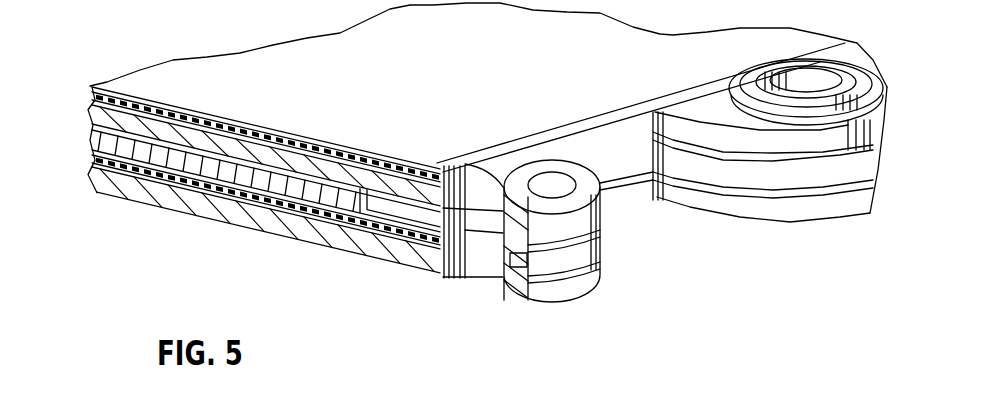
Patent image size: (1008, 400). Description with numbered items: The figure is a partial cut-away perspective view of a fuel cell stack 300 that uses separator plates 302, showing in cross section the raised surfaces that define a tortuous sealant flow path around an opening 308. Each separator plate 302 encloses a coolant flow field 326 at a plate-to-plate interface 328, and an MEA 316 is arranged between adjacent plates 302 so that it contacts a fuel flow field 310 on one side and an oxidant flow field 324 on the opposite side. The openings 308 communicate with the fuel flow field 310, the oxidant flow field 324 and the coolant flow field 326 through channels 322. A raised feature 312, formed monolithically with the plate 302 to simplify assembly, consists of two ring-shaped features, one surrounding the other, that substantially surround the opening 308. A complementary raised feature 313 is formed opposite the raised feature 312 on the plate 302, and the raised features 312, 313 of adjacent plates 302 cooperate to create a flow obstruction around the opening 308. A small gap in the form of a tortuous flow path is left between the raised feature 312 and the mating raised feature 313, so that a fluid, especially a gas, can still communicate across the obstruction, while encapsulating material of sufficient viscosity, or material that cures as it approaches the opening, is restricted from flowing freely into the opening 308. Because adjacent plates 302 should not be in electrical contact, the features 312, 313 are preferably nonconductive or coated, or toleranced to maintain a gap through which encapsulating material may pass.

The fuel cell stack 300 is at (716, 274).
The separator plate 302 is at (90, 105).
The opening 308 is at (487, 253).
The fuel flow field 310 is at (280, 132).
The raised feature 312 is at (540, 170).
The complementary raised feature 313 is at (518, 267).
The MEA 316 is at (437, 97).
The channel 322 is at (460, 277).
The oxidant flow field 324 is at (350, 257).
The coolant flow field 326 is at (244, 128).
The plate-to-plate interface 328 is at (600, 262).